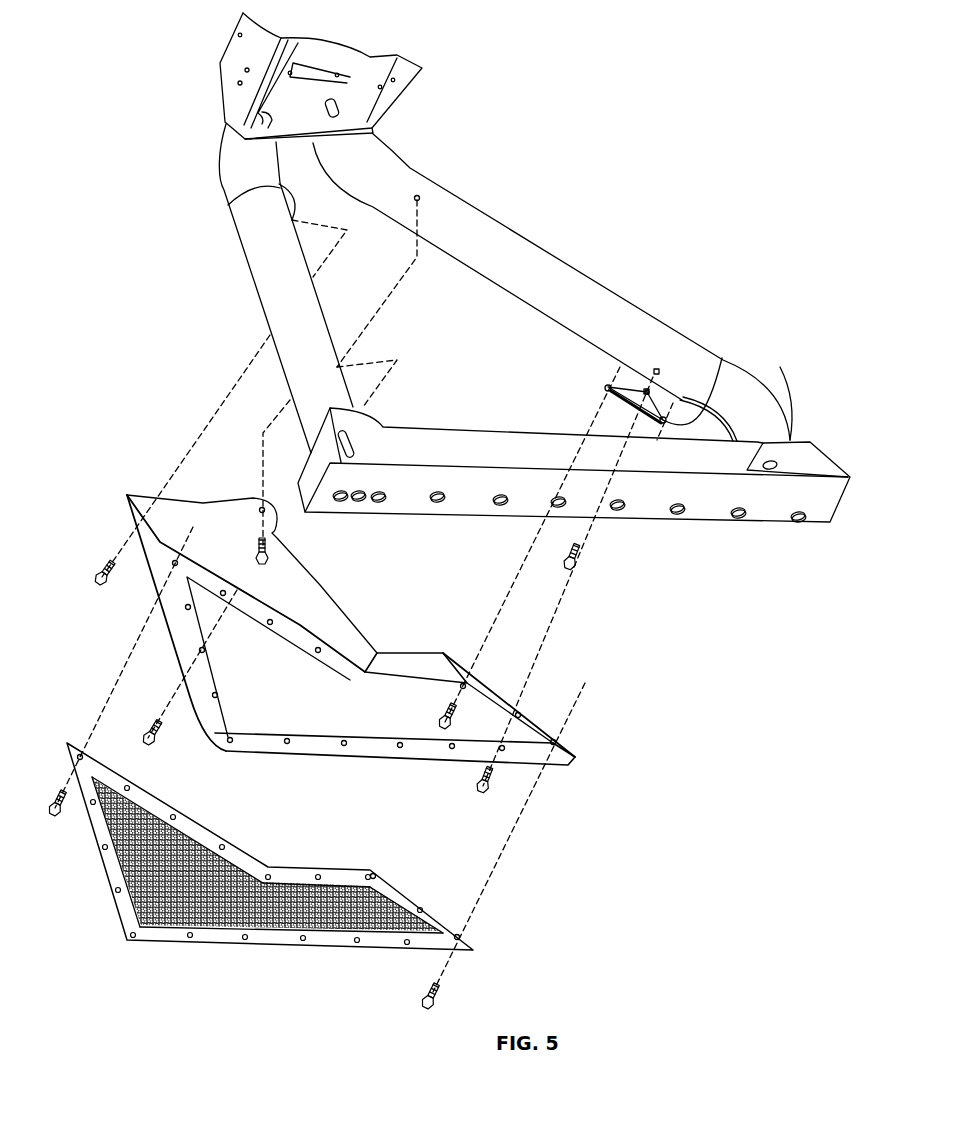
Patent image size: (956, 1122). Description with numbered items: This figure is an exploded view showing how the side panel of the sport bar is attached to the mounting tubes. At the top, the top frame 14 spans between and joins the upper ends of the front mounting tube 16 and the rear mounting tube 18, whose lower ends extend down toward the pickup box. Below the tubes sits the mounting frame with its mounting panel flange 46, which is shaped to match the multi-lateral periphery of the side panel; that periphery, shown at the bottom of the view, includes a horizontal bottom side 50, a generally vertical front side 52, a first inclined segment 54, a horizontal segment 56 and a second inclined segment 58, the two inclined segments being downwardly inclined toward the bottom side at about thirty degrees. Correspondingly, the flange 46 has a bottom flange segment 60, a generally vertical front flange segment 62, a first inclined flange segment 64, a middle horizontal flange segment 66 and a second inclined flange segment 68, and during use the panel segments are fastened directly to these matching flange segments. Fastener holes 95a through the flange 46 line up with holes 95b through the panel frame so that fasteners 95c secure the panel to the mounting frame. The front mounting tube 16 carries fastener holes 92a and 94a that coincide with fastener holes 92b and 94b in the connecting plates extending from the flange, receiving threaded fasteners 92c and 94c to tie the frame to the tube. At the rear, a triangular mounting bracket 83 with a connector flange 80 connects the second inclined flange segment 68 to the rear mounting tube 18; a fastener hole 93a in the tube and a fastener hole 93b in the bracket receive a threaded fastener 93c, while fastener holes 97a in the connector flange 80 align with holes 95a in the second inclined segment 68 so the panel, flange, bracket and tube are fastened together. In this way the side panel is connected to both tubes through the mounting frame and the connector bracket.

The top frame 14 is at (423, 78).
The front mounting tube 16 is at (258, 258).
The rear mounting tube 18 is at (500, 223).
The mounting panel flange 46 is at (351, 652).
The horizontal bottom side 50 is at (268, 868).
The generally vertical front side 52 is at (120, 912).
The first inclined segment 54 is at (190, 823).
The horizontal segment 56 is at (302, 868).
The second inclined segment 58 is at (405, 895).
The bottom flange segment 60 is at (310, 748).
The generally vertical front flange segment 62 is at (210, 673).
The first inclined flange segment 64 is at (282, 638).
The middle horizontal flange segment 66 is at (382, 685).
The second inclined flange segment 68 is at (493, 697).
The connector flange 80 is at (623, 404).
The mounting bracket 83 is at (633, 386).
The fastener holes in tube 92a is at (292, 218).
The fastener holes in plate 92b is at (137, 532).
The fastener 92c is at (99, 571).
The fastener hole in tube 93a is at (659, 372).
The fastener hole in bracket 93b is at (650, 392).
The fastener 93c is at (579, 558).
The fastener holes in tube 94a is at (419, 198).
The fastener holes in plate 94b is at (262, 508).
The fastener 94c is at (260, 540).
The fastener holes in flange 95a is at (217, 503).
The fastener holes in panel frame 95b is at (80, 756).
The fastener 95c is at (56, 815).
The fastener holes in connector flange 97a is at (608, 386).